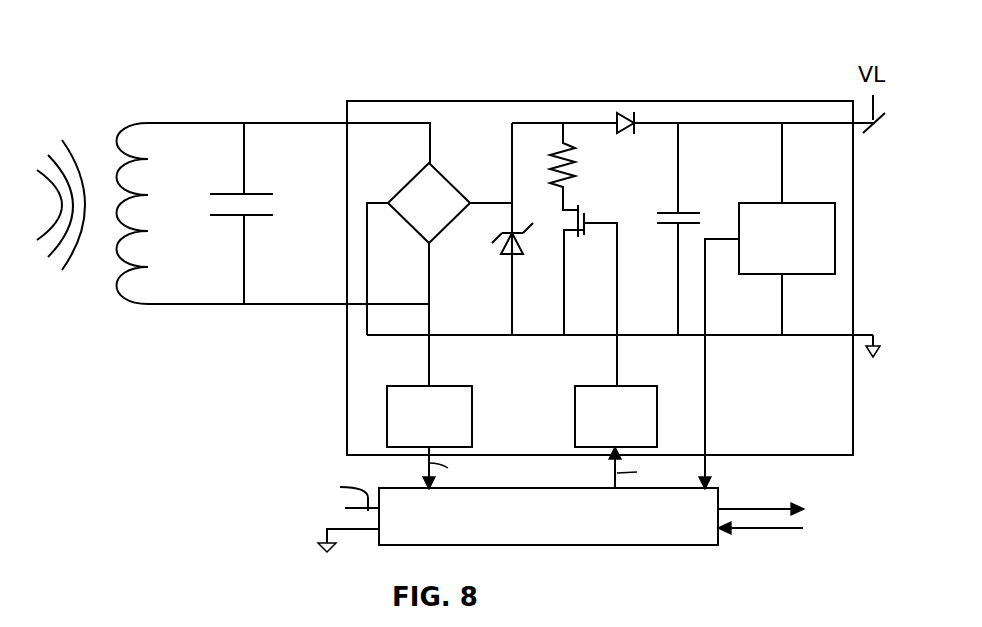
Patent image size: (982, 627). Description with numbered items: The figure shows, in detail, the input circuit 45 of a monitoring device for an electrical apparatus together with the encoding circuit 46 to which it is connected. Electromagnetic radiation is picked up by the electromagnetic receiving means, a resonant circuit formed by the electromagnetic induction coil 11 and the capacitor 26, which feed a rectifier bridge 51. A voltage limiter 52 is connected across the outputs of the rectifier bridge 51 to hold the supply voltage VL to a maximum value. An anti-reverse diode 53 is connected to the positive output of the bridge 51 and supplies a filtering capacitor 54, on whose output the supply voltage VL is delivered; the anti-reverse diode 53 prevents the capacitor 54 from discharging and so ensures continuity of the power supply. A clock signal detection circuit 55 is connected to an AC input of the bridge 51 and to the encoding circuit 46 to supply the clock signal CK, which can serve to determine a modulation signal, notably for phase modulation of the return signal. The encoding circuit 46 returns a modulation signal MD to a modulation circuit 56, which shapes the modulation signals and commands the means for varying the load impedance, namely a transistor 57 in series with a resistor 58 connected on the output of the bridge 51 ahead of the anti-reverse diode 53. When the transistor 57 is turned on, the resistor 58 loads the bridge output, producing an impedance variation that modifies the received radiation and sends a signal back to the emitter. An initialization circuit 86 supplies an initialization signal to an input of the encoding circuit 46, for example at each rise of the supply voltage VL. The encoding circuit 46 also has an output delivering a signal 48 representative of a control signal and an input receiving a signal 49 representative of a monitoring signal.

The electromagnetic induction coil 11 is at (140, 142).
The capacitor 26 is at (258, 193).
The rectifier bridge 51 is at (452, 183).
The voltage limiter 52 is at (520, 228).
The resistor 58 is at (573, 155).
The anti-reverse diode 53 is at (623, 112).
The filtering capacitor 54 is at (683, 213).
The initialization circuit 86 is at (811, 203).
The transistor 57 is at (587, 217).
The clock signal detection circuit 55 is at (387, 417).
The modulation circuit 56 is at (575, 407).
The input circuit 45 is at (847, 427).
The encoding circuit 46 is at (552, 547).
The signal representative of a control signal 48 is at (747, 509).
The signal representative of a monitoring signal 49 is at (738, 528).